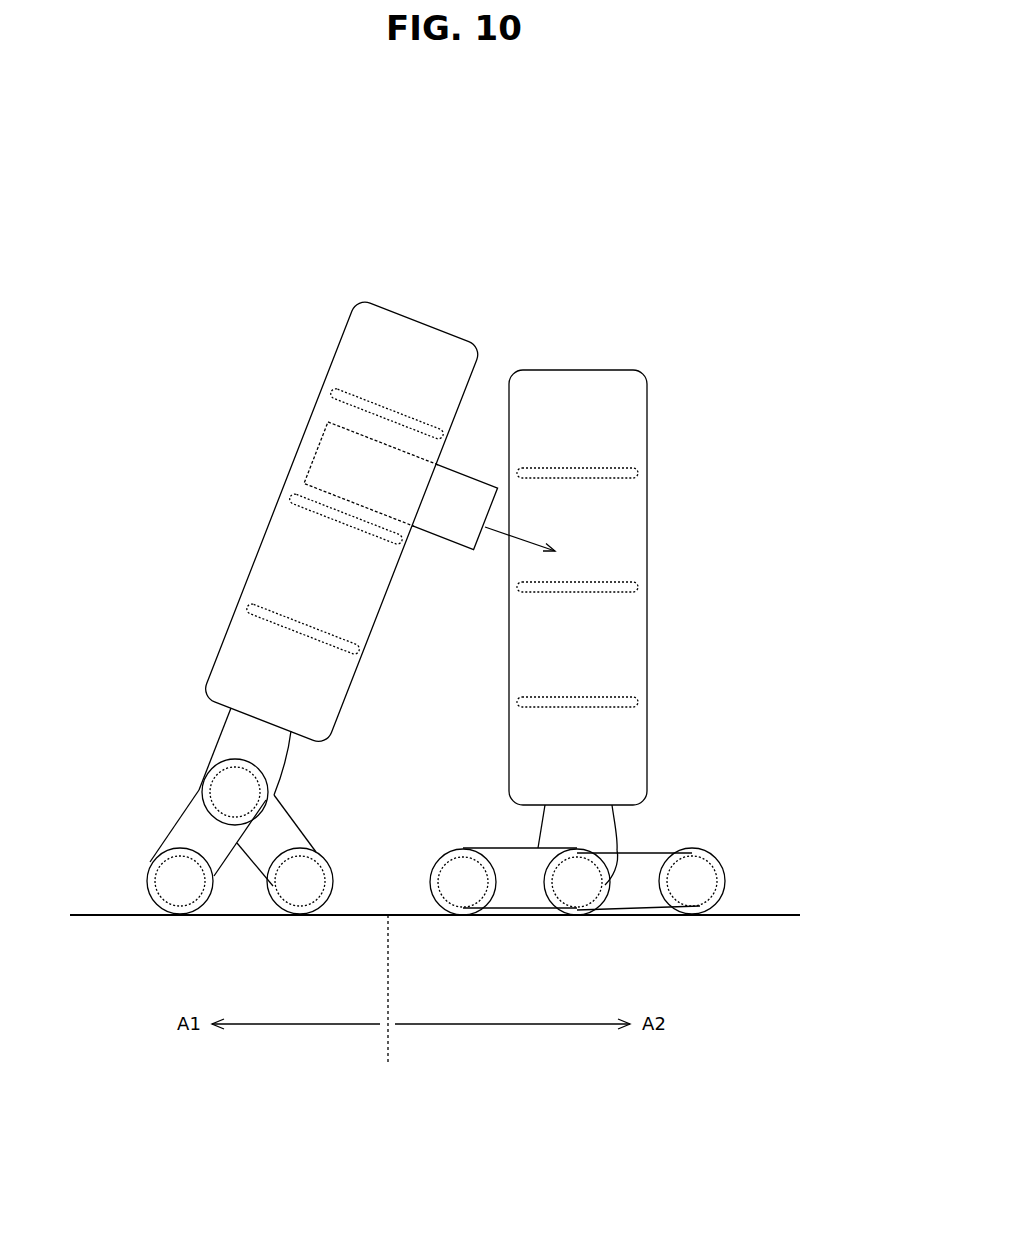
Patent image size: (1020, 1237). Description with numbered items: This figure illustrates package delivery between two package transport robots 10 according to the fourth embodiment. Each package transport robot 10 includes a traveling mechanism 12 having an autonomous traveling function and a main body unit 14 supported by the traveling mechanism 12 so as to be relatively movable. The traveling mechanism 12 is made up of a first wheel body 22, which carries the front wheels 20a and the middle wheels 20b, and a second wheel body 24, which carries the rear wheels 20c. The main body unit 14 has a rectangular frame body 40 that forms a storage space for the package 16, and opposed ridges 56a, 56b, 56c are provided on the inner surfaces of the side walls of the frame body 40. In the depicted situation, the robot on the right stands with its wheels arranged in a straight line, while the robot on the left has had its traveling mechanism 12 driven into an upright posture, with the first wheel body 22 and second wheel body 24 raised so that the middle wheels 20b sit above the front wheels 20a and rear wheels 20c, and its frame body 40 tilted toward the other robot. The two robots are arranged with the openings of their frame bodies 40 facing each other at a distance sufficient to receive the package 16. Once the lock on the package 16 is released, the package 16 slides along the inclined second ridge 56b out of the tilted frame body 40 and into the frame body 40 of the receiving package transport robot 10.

The package transport robot 10 is at (422, 272).
The traveling mechanism 12 is at (293, 812).
The main body unit 14 is at (330, 345).
The package 16 is at (448, 550).
The front wheel 20a is at (147, 915).
The middle wheel 20b is at (200, 795).
The rear wheel 20c is at (333, 902).
The first wheel body 22 is at (190, 835).
The second wheel body 24 is at (285, 842).
The frame body 40 is at (238, 645).
The first ridge 56a is at (357, 395).
The second ridge 56b is at (313, 497).
The third ridge 56c is at (268, 610).